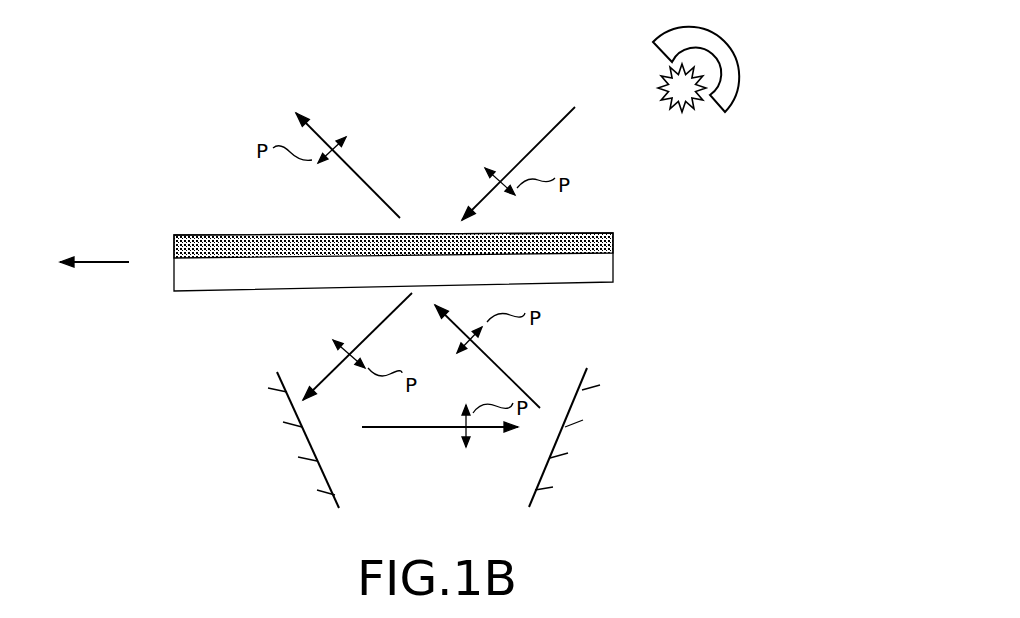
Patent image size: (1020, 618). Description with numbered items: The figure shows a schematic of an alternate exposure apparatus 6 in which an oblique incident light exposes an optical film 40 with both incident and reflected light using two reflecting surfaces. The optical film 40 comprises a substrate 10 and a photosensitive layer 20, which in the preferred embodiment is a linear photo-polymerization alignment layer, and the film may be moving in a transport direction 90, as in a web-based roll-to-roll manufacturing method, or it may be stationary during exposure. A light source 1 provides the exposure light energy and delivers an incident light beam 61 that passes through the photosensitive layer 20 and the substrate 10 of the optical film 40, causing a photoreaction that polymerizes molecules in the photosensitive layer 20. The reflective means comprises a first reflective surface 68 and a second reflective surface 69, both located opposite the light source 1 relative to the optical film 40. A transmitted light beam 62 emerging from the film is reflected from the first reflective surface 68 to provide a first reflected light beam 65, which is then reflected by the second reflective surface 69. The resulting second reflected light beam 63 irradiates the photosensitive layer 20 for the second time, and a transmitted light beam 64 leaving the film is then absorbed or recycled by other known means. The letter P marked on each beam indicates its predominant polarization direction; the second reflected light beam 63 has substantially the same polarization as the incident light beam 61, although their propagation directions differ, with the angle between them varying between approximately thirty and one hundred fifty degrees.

The light source 1 is at (746, 95).
The alternate exposure apparatus 6 is at (590, 70).
The substrate 10 is at (633, 268).
The photosensitive layer 20 is at (633, 238).
The optical film 40 is at (475, 235).
The incident light beam 61 is at (572, 118).
The transmitted light beam 62 is at (373, 340).
The second reflected light beam 63 is at (500, 352).
The transmitted light beam 64 is at (367, 175).
The first reflected light beam 65 is at (400, 437).
The first reflective surface 68 is at (273, 365).
The second reflective surface 69 is at (590, 367).
The transport direction 90 is at (83, 238).